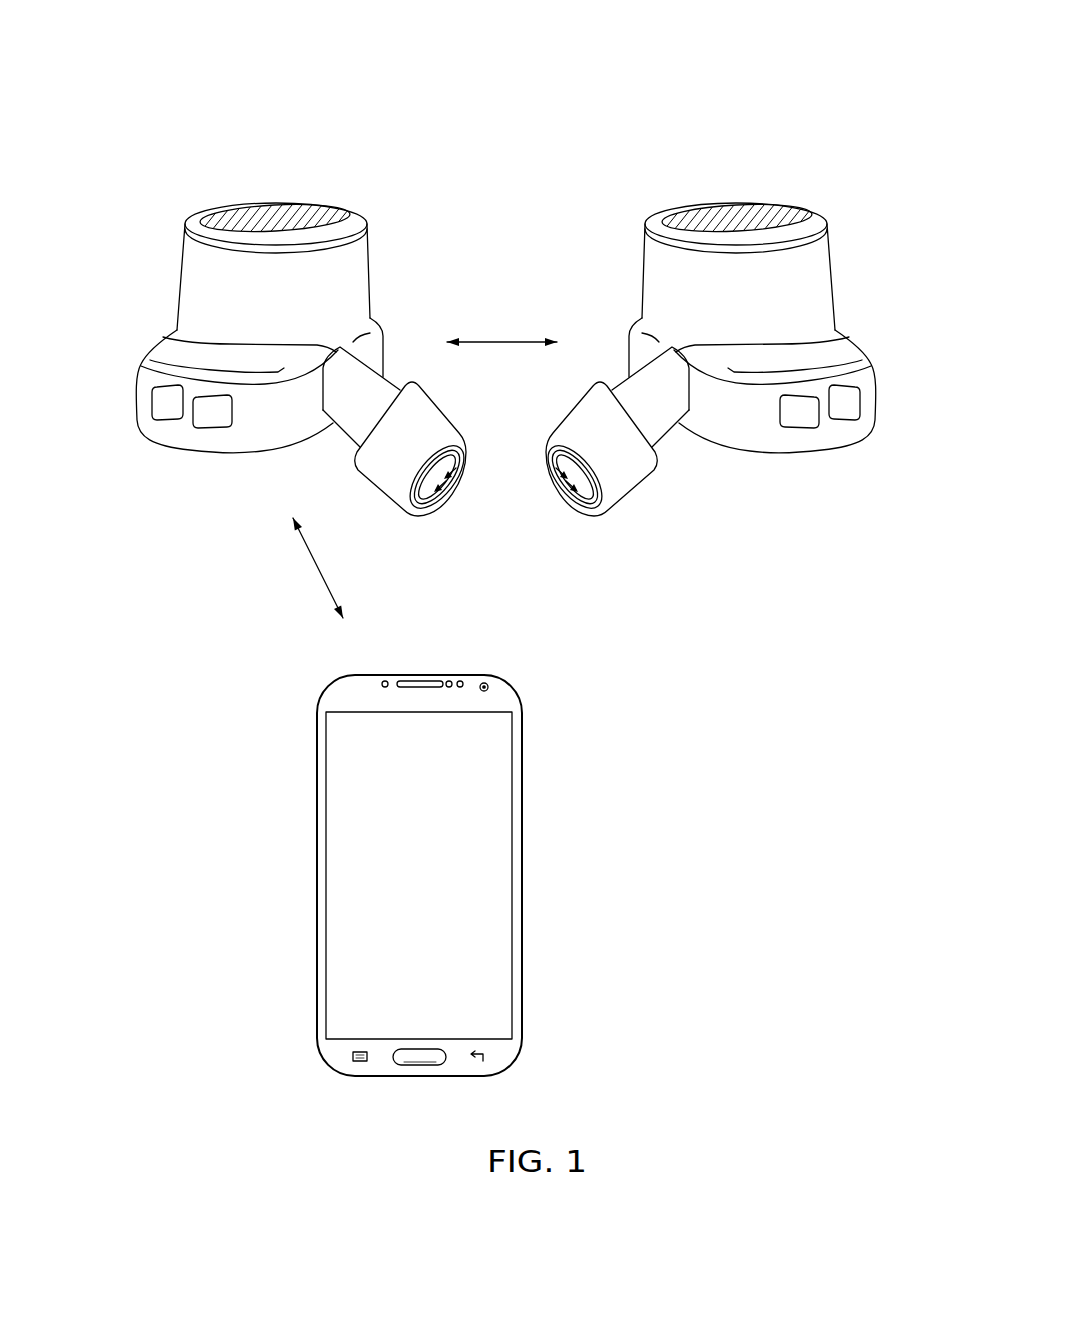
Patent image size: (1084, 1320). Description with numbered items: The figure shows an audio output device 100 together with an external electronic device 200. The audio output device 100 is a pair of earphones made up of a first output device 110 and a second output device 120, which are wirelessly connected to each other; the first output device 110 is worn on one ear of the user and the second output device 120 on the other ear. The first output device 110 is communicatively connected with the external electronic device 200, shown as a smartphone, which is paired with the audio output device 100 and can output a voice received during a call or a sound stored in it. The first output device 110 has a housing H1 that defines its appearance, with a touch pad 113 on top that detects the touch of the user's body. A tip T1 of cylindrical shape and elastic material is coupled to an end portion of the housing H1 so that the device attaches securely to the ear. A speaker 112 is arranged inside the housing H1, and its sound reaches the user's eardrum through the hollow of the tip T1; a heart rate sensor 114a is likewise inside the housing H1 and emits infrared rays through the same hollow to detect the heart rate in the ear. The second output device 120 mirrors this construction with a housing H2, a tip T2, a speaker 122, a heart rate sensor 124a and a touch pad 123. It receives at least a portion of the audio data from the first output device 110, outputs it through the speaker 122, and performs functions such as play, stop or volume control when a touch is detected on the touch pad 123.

The audio output device 100 is at (600, 97).
The first output device 110 is at (366, 186).
The second output device 120 is at (632, 186).
The touch pad 113 is at (275, 217).
The touch pad 123 is at (727, 217).
The housing H1 is at (368, 285).
The housing H2 is at (644, 285).
The tip T1 is at (438, 403).
The tip T2 is at (572, 404).
The speaker 112 is at (443, 493).
The speaker 122 is at (550, 488).
The heart rate sensor 114a is at (452, 478).
The heart rate sensor 124a is at (574, 512).
The external electronic device 200 is at (522, 757).